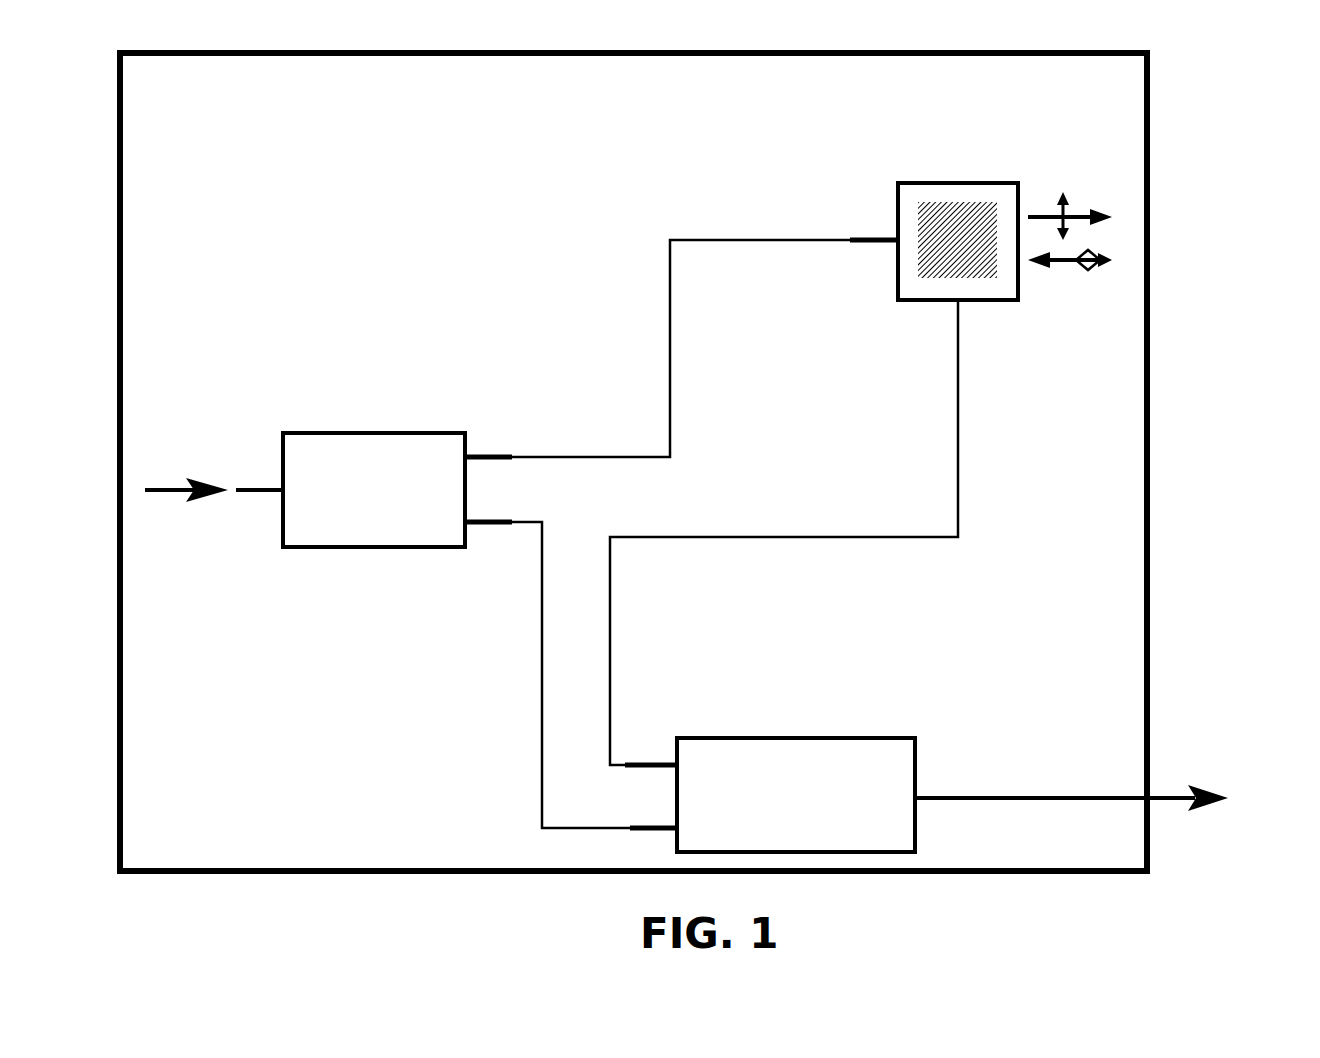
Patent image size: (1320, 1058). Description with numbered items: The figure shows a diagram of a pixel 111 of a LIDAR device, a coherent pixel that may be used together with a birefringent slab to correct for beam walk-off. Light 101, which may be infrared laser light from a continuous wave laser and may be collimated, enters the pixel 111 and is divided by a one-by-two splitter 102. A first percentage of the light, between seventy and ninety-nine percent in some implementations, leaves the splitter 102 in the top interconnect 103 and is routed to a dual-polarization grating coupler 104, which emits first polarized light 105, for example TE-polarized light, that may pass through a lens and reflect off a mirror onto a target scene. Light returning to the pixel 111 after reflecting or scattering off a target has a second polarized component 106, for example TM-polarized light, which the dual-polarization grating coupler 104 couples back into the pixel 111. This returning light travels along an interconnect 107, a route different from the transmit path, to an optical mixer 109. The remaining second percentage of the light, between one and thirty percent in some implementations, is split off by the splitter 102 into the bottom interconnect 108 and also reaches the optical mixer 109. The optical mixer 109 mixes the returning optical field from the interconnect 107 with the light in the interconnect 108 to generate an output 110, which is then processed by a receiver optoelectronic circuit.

The light 101 is at (206, 456).
The 1×2 splitter 102 is at (380, 421).
The top interconnect 103 is at (630, 450).
The dual-polarization grating coupler 104 is at (955, 168).
The first polarized light 105 is at (1052, 182).
The second polarized component 106 is at (1058, 278).
The interconnect 107 is at (858, 521).
The bottom interconnect 108 is at (533, 662).
The optical mixer 109 is at (818, 728).
The output 110 is at (995, 787).
The pixel 111 is at (1157, 668).